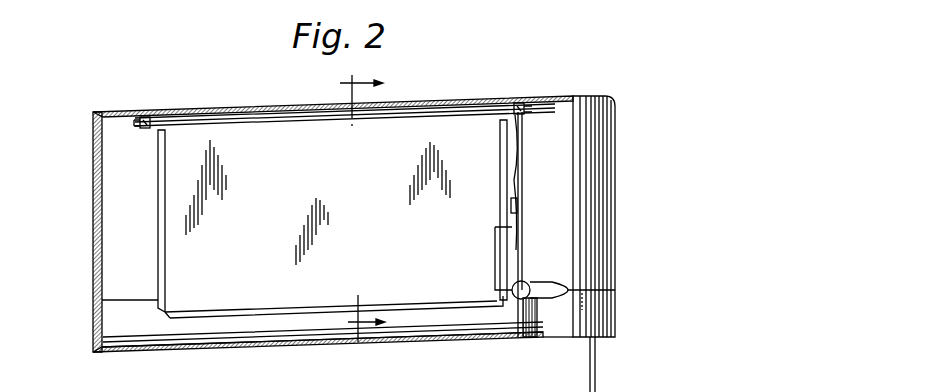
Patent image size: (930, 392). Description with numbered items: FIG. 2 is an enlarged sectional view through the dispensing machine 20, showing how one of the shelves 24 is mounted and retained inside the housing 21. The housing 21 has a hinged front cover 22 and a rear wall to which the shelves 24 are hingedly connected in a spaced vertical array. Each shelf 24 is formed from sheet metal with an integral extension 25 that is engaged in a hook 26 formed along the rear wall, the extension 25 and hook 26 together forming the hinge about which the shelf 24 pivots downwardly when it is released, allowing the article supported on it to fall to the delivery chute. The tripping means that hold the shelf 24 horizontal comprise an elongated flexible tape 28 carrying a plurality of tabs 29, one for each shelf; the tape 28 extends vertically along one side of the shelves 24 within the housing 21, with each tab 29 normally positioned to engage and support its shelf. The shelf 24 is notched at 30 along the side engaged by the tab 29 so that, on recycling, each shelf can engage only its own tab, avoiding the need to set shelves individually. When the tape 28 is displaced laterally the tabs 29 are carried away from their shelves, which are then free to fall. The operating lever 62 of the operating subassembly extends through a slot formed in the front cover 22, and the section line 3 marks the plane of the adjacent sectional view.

The dispensing machine 20 is at (90, 228).
The housing 21 is at (613, 218).
The hinged front cover 22 is at (212, 352).
The shelf 24 is at (368, 206).
The integral extension 25 is at (143, 128).
The hook 26 is at (148, 117).
The elongated flexible tape 28 is at (522, 210).
The tab 29 is at (511, 206).
The notch 30 is at (495, 243).
The operating lever 62 is at (597, 381).
The section line 3- 3 is at (351, 208).